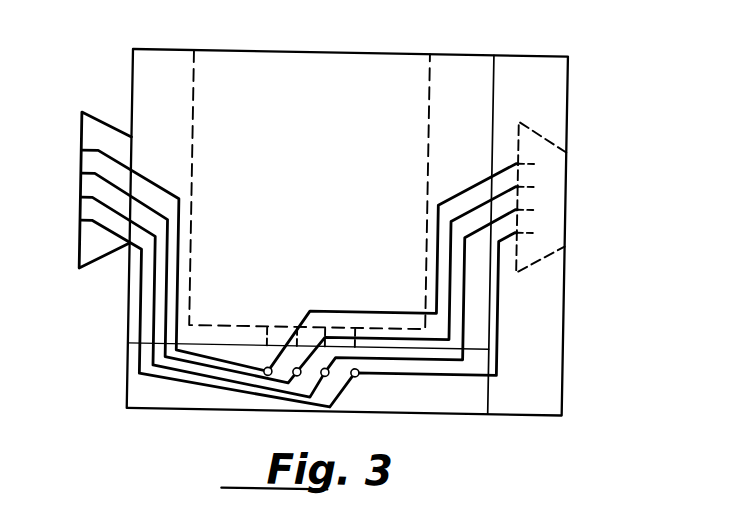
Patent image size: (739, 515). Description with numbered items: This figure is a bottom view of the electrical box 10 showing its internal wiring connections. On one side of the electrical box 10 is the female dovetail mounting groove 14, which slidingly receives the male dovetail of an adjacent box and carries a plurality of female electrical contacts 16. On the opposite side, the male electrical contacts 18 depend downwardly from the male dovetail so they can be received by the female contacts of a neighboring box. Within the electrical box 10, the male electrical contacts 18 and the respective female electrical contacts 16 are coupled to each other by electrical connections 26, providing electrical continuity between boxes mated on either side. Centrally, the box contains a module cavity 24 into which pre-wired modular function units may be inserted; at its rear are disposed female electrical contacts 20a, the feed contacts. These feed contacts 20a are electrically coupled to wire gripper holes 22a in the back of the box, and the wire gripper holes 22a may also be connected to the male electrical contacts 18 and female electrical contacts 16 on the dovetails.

The electrical box 10 is at (657, 172).
The female dovetail mounting groove 14 is at (530, 146).
The female electrical contacts 16 is at (528, 226).
The male electrical contacts 18 is at (89, 146).
The female electrical contacts 20a is at (270, 333).
The wire gripper holes 22a is at (303, 373).
The module cavity 24 is at (296, 75).
The electrical connections 26 is at (170, 308).